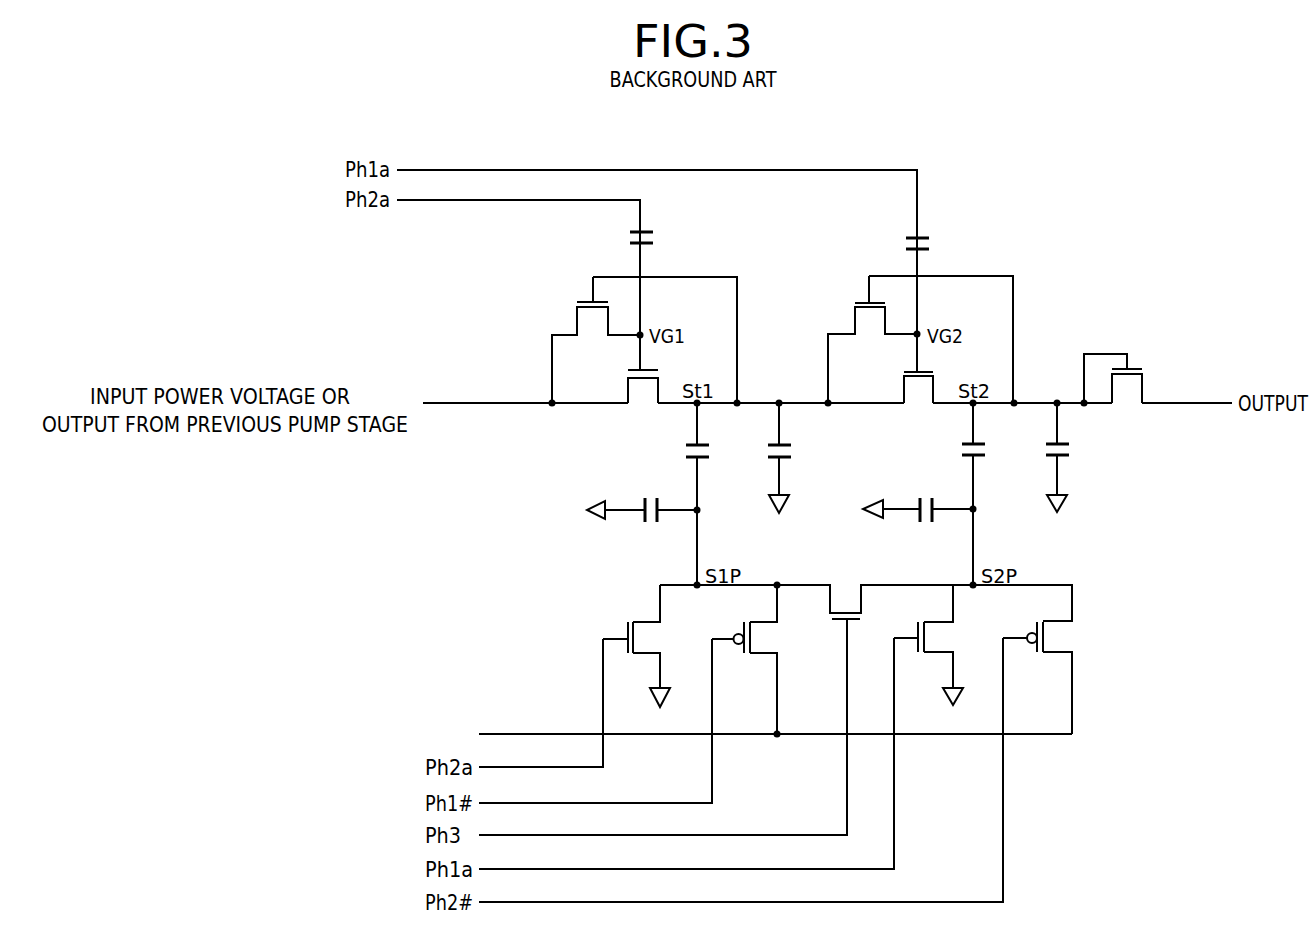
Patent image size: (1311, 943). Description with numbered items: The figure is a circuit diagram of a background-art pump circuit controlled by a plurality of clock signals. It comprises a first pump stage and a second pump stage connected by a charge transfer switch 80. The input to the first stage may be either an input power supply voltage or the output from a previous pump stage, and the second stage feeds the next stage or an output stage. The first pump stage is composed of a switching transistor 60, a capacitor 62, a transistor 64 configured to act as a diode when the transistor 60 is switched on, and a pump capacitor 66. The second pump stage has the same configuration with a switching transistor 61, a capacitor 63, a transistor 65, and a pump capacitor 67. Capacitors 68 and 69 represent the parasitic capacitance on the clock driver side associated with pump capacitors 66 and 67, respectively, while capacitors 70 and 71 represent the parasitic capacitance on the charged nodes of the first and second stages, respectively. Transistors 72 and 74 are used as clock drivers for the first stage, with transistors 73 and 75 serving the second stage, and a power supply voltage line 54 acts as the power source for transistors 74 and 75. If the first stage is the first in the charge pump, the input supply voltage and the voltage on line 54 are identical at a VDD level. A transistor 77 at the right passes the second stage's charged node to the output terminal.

The power supply voltage line 54 is at (515, 733).
The switching transistor 60 is at (585, 301).
The switching transistor 61 is at (862, 302).
The capacitor 62 is at (632, 231).
The capacitor 63 is at (908, 237).
The transistor 64 is at (630, 370).
The transistor 65 is at (906, 371).
The pump capacitor 66 is at (690, 444).
The pump capacitor 67 is at (966, 443).
The capacitor 68 is at (644, 502).
The capacitor 69 is at (919, 501).
The capacitor 70 is at (772, 444).
The capacitor 71 is at (1050, 443).
The transistor 72 is at (627, 627).
The transistor 73 is at (917, 631).
The transistor 74 is at (743, 628).
The transistor 75 is at (1036, 628).
The output transistor 77 is at (1140, 366).
The charge transfer switch 80 is at (839, 622).